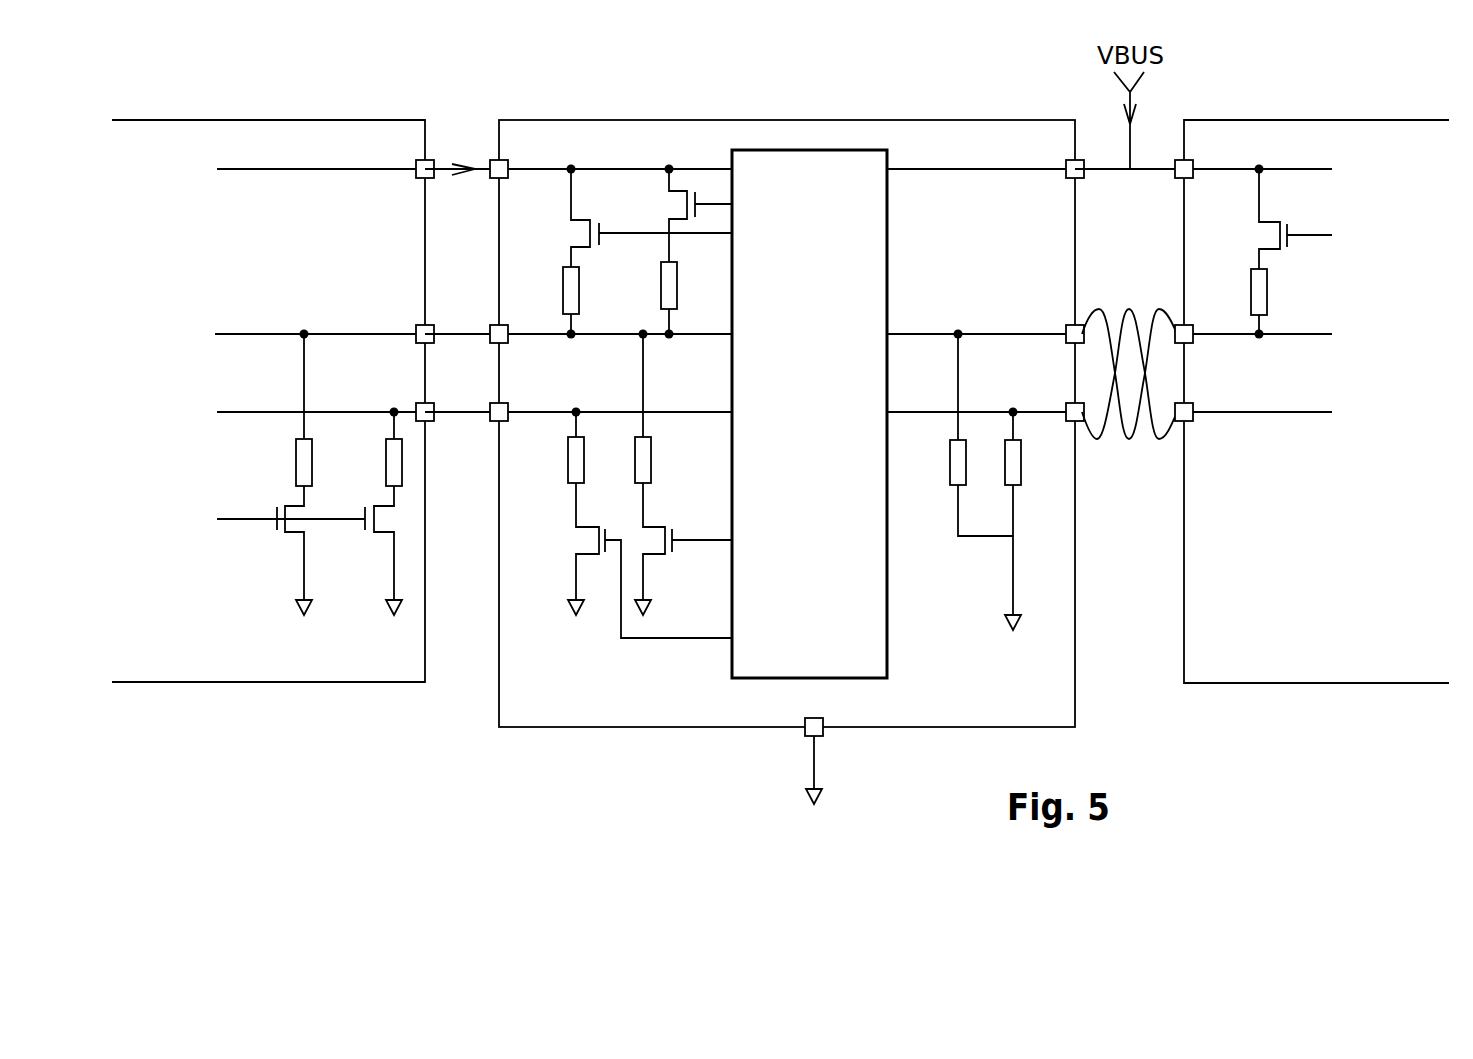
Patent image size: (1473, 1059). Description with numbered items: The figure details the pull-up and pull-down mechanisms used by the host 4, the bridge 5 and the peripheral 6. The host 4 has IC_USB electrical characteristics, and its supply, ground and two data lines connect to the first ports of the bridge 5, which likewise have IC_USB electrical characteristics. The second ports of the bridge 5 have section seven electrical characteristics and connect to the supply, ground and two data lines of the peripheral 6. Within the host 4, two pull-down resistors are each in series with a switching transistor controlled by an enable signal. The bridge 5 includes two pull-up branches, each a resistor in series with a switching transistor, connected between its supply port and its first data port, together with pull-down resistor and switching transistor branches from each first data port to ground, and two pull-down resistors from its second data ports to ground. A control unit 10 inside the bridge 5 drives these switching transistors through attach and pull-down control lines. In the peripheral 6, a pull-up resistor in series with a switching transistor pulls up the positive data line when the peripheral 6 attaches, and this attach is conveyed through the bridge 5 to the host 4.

The host 4 is at (270, 401).
The bridge 5 is at (787, 462).
The peripheral 6 is at (1312, 401).
The control unit 10 is at (809, 414).